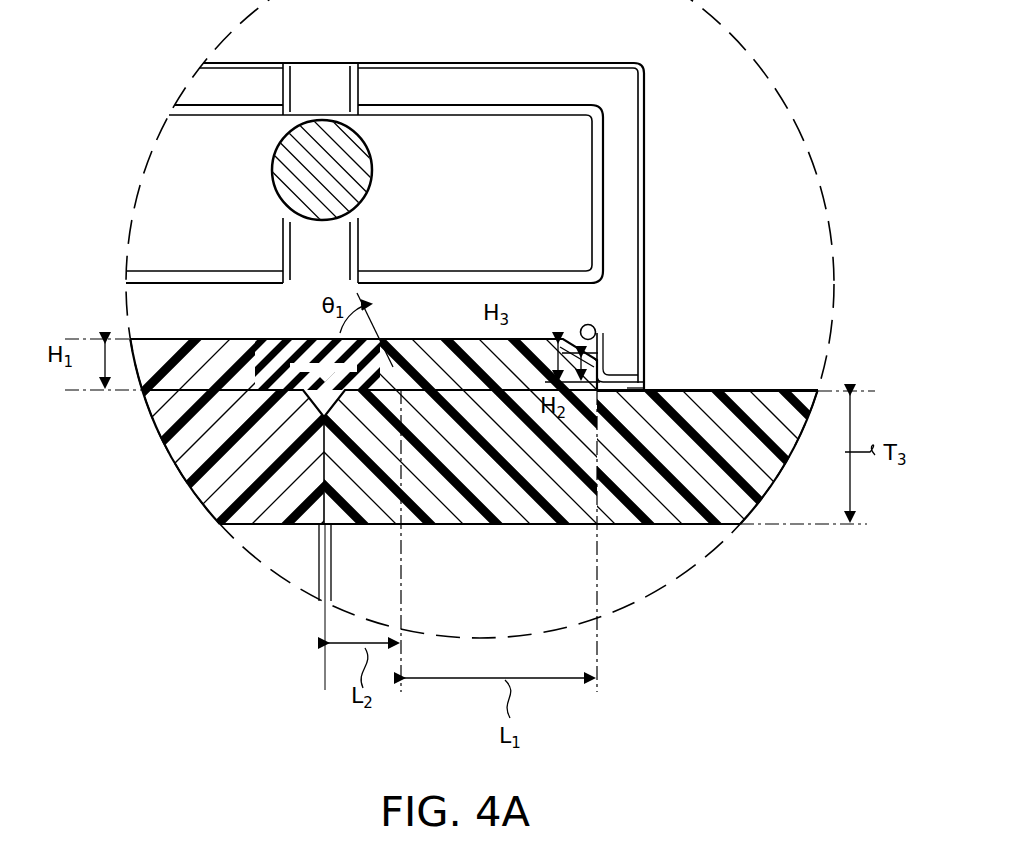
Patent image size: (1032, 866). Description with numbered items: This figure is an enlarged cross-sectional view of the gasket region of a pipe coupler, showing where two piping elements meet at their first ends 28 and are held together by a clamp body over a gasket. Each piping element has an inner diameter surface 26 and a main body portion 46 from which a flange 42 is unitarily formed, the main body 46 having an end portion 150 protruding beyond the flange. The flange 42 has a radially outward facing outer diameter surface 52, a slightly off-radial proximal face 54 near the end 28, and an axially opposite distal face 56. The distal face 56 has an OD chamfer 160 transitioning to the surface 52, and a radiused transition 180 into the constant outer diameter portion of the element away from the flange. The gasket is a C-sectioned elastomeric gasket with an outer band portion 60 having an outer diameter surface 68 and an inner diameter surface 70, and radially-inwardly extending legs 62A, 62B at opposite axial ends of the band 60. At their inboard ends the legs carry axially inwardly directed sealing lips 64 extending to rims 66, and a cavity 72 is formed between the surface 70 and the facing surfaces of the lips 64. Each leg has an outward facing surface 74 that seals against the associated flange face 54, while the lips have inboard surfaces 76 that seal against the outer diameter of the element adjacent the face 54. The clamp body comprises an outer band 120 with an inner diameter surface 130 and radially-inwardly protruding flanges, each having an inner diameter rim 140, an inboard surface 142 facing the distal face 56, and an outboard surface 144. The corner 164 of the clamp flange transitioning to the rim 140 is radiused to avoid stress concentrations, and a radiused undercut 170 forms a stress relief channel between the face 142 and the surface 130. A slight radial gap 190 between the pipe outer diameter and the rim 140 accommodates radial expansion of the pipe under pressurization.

The inner diameter surface 26 is at (620, 527).
The first end 28 is at (287, 473).
The flange 42 is at (484, 400).
The main body portion 46 is at (703, 495).
The outer diameter surface 52 is at (545, 338).
The proximal face 54 is at (335, 393).
The distal face 56 is at (600, 365).
The outer band portion 60 is at (275, 362).
The first leg 62A is at (277, 347).
The second leg 62B is at (368, 358).
The sealing lip 64 is at (318, 392).
The rim 66 is at (320, 395).
The outer diameter surface 68 is at (310, 337).
The inner diameter surface 70 is at (200, 388).
The cavity 72 is at (192, 480).
The outward facing surface 74 is at (393, 373).
The inboard surface 76 is at (390, 392).
The outer band 120 is at (582, 298).
The inner diameter surface 130 is at (510, 420).
The inner diameter rim 140 is at (603, 390).
The inboard surface 142 is at (572, 340).
The outboard surface 144 is at (627, 370).
The end portion 150 is at (363, 495).
The OD chamfer 160 is at (594, 362).
The corner 164 is at (590, 400).
The radiused undercut 170 is at (602, 326).
The radiused transition 180 is at (600, 388).
The radial gap 190 is at (627, 388).